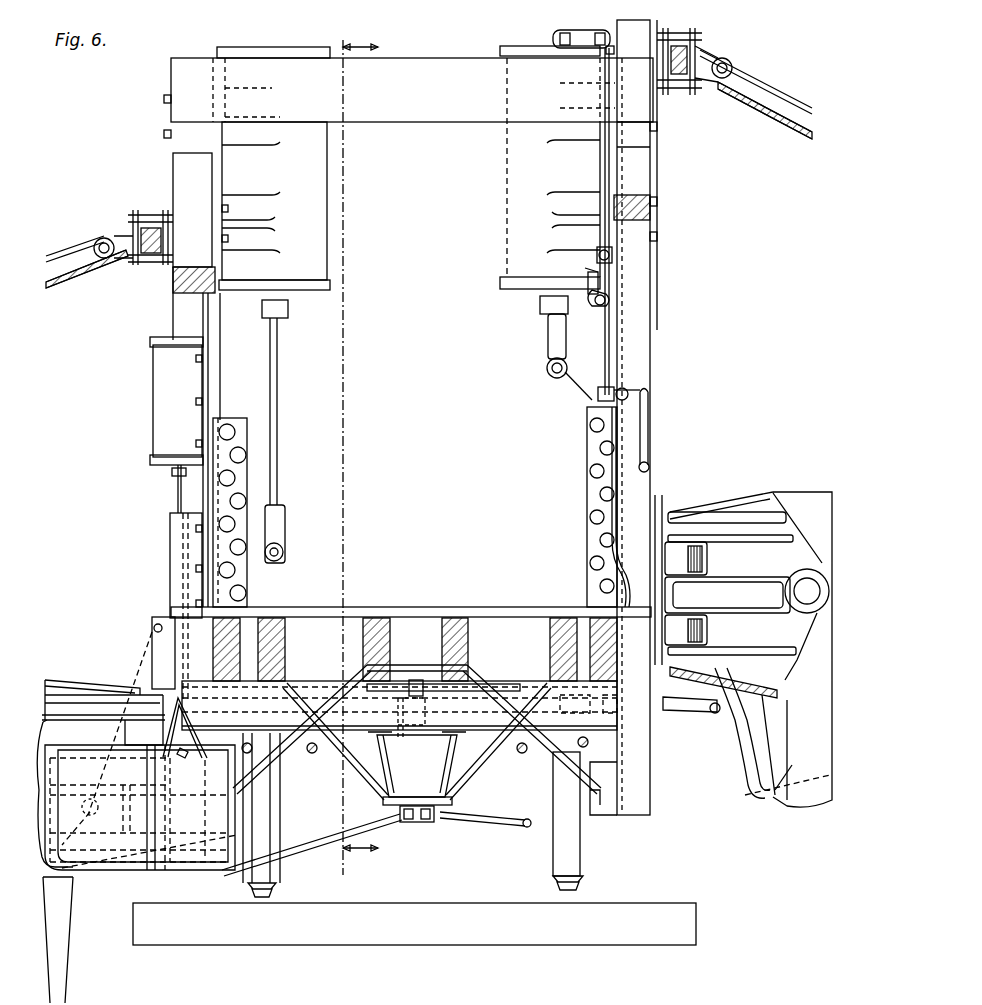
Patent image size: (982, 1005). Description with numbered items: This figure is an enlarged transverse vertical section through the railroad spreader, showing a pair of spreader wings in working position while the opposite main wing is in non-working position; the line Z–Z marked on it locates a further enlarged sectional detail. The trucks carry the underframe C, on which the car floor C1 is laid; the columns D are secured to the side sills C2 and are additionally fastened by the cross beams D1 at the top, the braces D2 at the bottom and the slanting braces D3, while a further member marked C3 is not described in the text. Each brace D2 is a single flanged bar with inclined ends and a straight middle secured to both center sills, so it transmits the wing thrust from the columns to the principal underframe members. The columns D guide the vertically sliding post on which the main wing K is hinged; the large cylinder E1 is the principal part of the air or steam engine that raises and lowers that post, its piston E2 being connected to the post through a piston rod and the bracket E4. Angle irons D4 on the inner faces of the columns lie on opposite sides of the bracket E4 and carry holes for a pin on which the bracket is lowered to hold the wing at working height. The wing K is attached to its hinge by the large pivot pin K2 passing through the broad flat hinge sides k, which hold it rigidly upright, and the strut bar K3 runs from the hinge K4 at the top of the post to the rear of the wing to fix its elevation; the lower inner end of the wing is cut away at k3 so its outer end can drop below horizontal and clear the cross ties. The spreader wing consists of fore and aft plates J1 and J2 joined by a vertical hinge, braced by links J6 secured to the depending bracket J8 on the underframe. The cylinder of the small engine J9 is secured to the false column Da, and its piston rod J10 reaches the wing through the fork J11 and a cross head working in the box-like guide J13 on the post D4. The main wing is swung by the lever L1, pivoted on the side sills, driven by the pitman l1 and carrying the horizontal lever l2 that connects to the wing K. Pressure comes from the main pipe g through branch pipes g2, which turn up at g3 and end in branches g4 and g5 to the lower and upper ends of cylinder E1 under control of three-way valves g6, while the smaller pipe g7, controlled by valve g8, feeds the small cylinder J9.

The section line Z— Z is at (356, 445).
The cross bar or beam D1 is at (408, 166).
The bottom brace D2 is at (548, 740).
The slanting brace D3 is at (183, 186).
The column D is at (646, 803).
The false column Da is at (222, 322).
The angle iron member D4 is at (590, 442).
The large cylinder E1 is at (408, 168).
The piston E2 is at (283, 566).
The bracket or cross head E4 is at (572, 382).
The car floor C1 is at (380, 607).
The underframe C is at (441, 652).
The side sill C2 is at (578, 660).
The post C3 is at (248, 668).
The main pipe g is at (418, 712).
The branch pipe g2 is at (520, 686).
The stand pipe g3 is at (598, 332).
The branch pipe to lower cylinder end g4 is at (586, 290).
The branch pipe to upper cylinder end g5 is at (577, 42).
The three way valve g6 is at (612, 257).
The smaller pipe g7 is at (652, 442).
The valve g8 is at (620, 390).
The fore plate of spreader wing J1 is at (162, 815).
The aft plate of spreader wing J2 is at (143, 813).
The link J6 is at (300, 840).
The depending brace or bracket J8 is at (418, 822).
The air or steam engine cylinder J9 is at (176, 401).
The piston rod J10 is at (178, 493).
The fork J11 is at (195, 725).
The box-like guide J13 is at (185, 584).
The main wing K is at (48, 925).
The horizontal pivot pin K2 is at (800, 588).
The strut bar or link K3 is at (80, 252).
The hinge K4 is at (128, 232).
The broad flat hinge side k is at (773, 538).
The cut-away portion of wing k3 is at (760, 730).
The lever L1 is at (150, 638).
The pitman l1 is at (673, 713).
The horizontal lever l2 is at (778, 800).